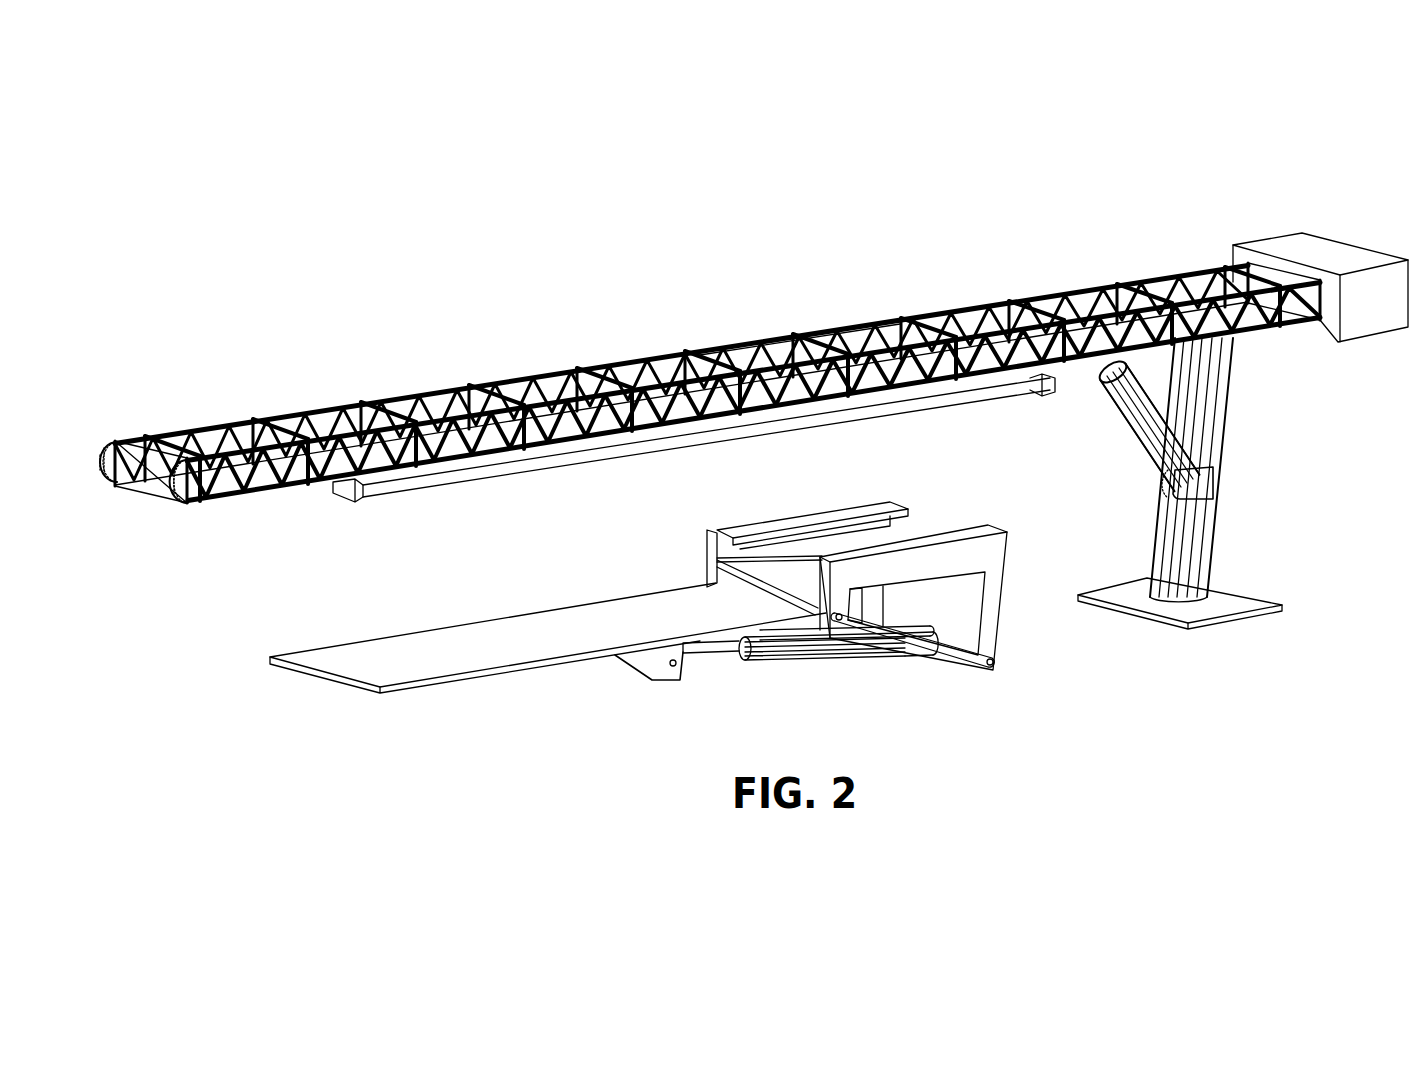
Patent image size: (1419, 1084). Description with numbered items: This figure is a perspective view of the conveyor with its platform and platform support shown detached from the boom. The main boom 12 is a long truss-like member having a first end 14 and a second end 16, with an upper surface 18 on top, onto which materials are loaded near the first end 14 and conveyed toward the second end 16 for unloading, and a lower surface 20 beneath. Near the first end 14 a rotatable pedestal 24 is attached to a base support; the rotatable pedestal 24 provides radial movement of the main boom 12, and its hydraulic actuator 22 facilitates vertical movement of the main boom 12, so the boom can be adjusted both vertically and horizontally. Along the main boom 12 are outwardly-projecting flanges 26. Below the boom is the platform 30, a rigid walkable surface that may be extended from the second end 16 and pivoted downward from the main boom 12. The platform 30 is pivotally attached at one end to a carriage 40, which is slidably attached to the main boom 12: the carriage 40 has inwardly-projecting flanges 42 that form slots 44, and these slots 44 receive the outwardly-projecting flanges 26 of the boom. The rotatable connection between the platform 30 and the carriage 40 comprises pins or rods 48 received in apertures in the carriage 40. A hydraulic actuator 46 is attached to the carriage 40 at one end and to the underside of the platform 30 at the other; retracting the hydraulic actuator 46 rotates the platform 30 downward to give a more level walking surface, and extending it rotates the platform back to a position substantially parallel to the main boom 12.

The main boom 12 is at (415, 405).
The first end 14 is at (1215, 258).
The second end 16 is at (197, 503).
The upper surface 18 is at (824, 323).
The lower surface 20 is at (275, 493).
The hydraulic actuator 22 is at (1122, 437).
The rotatable pedestal 24 is at (1180, 483).
The outwardly-projecting flanges 26 is at (435, 480).
The platform 30 is at (447, 679).
The carriage 40 is at (992, 607).
The inwardly-projecting flanges 42 is at (905, 508).
The slots 44 is at (722, 550).
The hydraulic actuator 46 is at (797, 657).
The pins or rods 48 is at (880, 661).